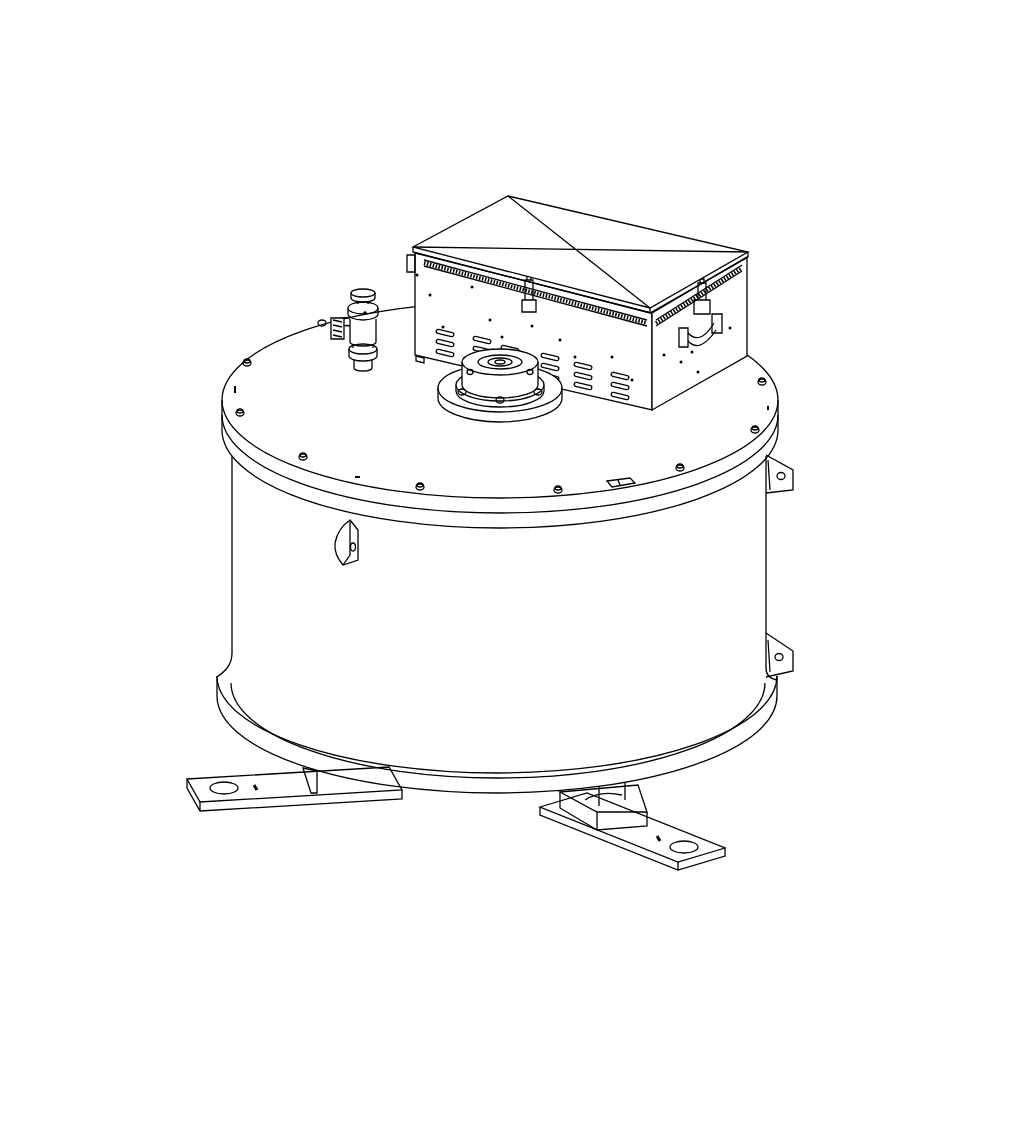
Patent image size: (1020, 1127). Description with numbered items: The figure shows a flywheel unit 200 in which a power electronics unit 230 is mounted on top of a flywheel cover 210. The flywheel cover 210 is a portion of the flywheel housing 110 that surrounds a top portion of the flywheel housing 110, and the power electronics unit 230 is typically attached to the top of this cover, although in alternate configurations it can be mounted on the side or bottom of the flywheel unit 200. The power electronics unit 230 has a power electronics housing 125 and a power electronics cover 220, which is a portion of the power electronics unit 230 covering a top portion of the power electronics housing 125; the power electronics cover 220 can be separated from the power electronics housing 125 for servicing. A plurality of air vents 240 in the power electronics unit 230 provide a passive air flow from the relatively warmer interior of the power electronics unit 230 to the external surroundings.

The flywheel unit 200 is at (337, 110).
The flywheel cover 210 is at (265, 370).
The power electronics cover 220 is at (507, 217).
The power electronics unit 230 is at (596, 202).
The flywheel housing 110 is at (232, 508).
The air vents 240 is at (615, 393).
The power electronics housing 125 is at (697, 367).